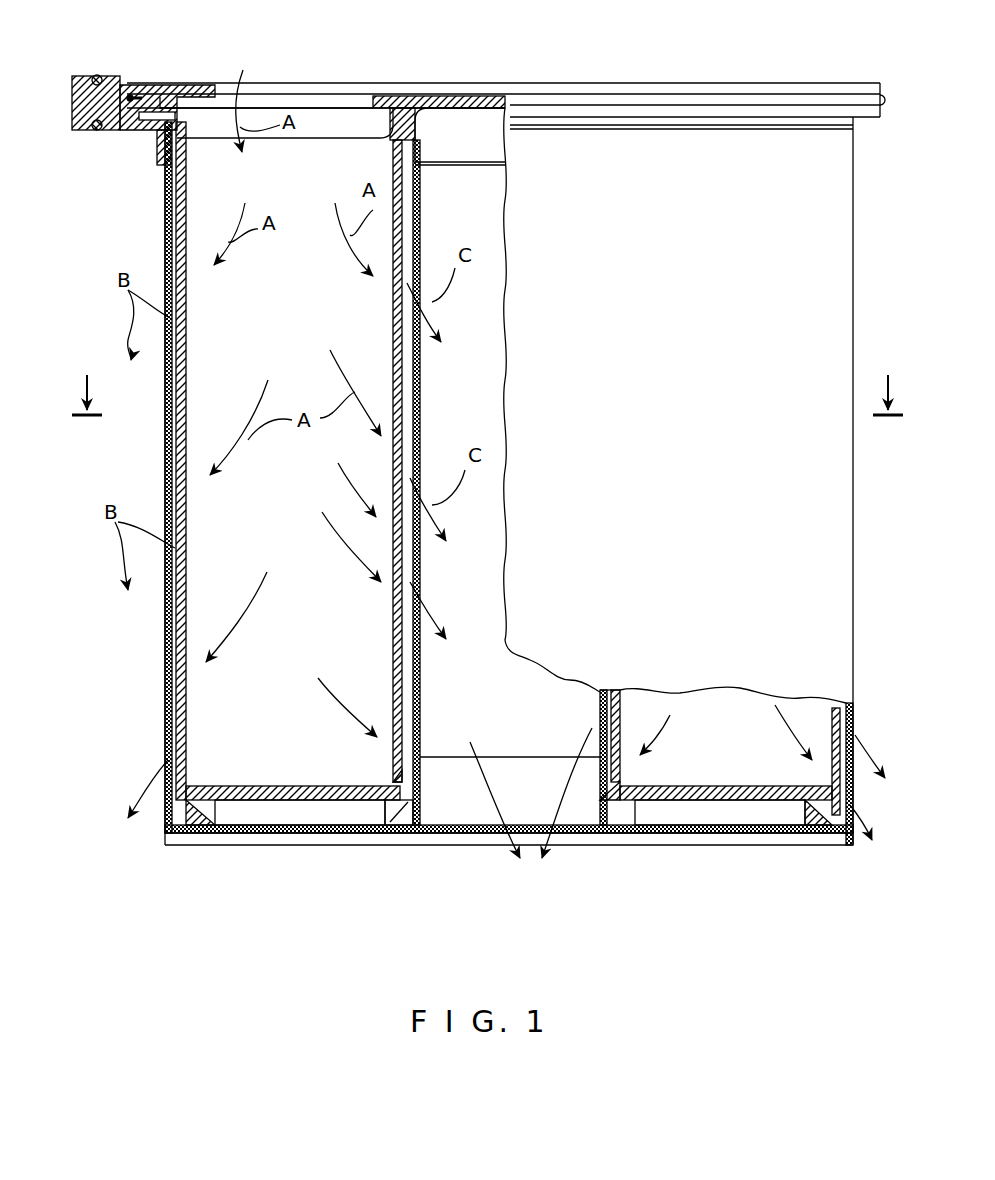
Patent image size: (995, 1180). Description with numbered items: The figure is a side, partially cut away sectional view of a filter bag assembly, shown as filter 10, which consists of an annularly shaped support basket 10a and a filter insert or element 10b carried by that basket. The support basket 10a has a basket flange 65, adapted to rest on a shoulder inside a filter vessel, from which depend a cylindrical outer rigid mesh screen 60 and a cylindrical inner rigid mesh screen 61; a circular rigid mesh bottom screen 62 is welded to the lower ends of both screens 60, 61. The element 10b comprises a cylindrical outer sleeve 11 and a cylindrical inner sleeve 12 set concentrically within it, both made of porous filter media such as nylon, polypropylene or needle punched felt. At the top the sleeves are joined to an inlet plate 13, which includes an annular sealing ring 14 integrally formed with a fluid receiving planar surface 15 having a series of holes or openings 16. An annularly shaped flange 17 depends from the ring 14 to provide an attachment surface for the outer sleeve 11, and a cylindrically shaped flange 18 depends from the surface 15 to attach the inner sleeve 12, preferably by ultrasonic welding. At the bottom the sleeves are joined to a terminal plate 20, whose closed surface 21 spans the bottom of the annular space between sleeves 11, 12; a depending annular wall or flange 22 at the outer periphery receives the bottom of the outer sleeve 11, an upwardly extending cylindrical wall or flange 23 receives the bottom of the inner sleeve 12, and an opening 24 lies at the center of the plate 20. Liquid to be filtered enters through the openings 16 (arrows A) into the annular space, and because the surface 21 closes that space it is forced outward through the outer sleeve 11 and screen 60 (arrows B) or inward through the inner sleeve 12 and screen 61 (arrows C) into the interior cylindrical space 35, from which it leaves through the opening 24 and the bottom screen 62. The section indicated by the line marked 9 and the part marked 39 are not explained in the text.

The section line 9 is at (484, 390).
The filter 10 is at (215, 868).
The support basket 10a is at (148, 476).
The insert or element 10b is at (808, 535).
The outer sleeve 11 is at (172, 690).
The inner sleeve 12 is at (393, 698).
The inlet plate 13 is at (402, 82).
The annular sealing ring 14 is at (150, 86).
The fluid receiving planar surface 15 is at (233, 96).
The holes or openings 16 is at (290, 100).
The annularly shaped flange 17 is at (158, 150).
The cylindrically shaped flange 18 is at (415, 148).
The terminal plate 20 is at (430, 835).
The closed surface 21 is at (262, 786).
The depending annular wall or flange 22 is at (180, 812).
The upwardly extending cylindrical wall or flange 23 is at (420, 763).
The opening 24 is at (582, 825).
The interior cylindrical space 35 is at (555, 716).
The fastener 39 is at (120, 130).
The outer rigid mesh cylindrical screen 60 is at (176, 415).
The inner rigid mesh cylindrical screen 61 is at (420, 410).
The circular rigid mesh bottom screen 62 is at (288, 835).
The basket flange 65 is at (103, 74).